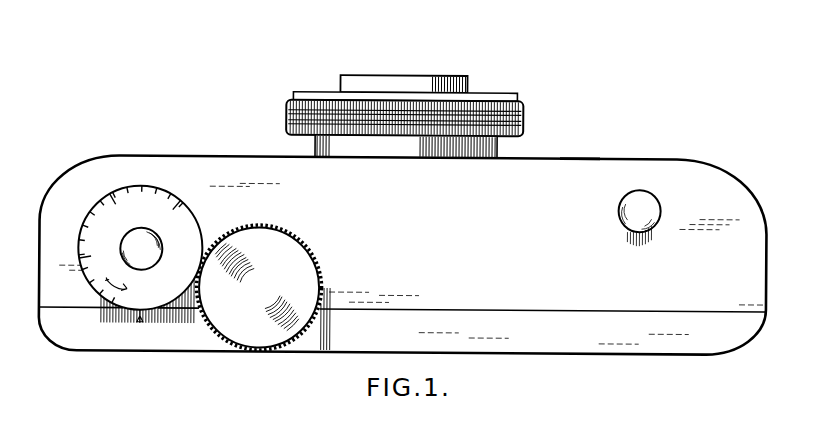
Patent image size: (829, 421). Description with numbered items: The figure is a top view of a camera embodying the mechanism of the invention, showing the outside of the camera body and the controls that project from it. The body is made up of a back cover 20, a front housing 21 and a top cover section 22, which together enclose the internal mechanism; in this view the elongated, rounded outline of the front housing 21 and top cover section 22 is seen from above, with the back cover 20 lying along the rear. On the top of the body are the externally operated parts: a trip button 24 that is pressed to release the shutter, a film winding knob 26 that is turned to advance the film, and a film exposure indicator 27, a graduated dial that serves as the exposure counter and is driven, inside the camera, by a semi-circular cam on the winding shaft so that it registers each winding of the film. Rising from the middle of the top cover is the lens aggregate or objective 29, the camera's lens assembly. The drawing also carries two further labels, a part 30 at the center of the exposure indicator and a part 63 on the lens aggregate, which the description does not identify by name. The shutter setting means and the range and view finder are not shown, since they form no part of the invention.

The back cover 20 is at (537, 351).
The front housing 21 is at (577, 154).
The top cover section 22 is at (397, 250).
The trip button 24 is at (657, 198).
The film winding knob 26 is at (302, 239).
The film exposure indicator 27 is at (156, 187).
The lens aggregate or objective 29 is at (468, 78).
The dial hub 30 is at (125, 240).
The knurled lens ring 63 is at (524, 103).